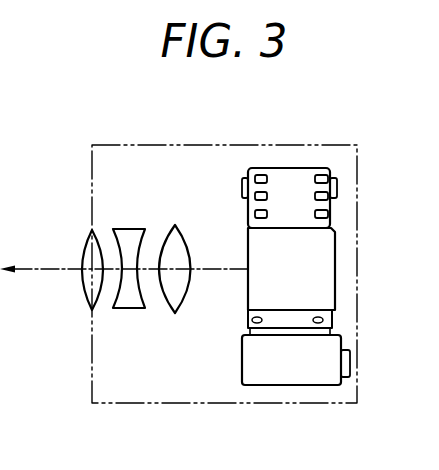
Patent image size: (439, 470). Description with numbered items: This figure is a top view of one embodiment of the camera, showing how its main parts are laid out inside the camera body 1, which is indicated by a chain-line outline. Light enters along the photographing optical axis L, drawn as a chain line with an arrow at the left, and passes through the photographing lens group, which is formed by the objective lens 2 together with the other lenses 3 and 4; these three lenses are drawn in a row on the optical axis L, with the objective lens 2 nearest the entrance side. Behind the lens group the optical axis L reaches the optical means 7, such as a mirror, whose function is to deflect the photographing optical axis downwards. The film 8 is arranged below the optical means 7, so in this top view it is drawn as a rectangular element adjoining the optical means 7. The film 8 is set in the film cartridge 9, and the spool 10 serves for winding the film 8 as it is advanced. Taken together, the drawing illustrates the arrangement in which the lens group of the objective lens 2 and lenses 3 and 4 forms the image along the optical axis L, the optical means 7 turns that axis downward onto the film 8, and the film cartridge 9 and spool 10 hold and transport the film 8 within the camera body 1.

The camera body 1 is at (351, 143).
The objective lens 2 is at (92, 230).
The lens 3 is at (131, 228).
The lens 4 is at (175, 225).
The optical means 7 is at (337, 268).
The film 8 is at (295, 178).
The film cartridge 9 is at (324, 388).
The spool 10 is at (337, 190).
The photographing optical axis L is at (0, 257).